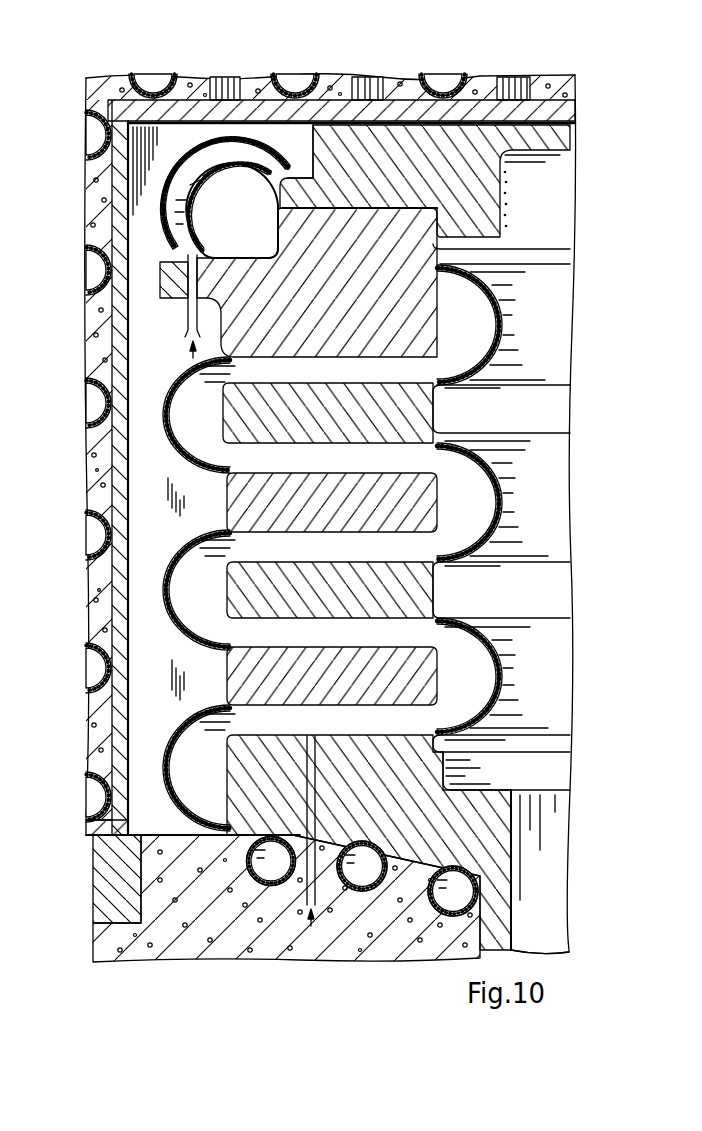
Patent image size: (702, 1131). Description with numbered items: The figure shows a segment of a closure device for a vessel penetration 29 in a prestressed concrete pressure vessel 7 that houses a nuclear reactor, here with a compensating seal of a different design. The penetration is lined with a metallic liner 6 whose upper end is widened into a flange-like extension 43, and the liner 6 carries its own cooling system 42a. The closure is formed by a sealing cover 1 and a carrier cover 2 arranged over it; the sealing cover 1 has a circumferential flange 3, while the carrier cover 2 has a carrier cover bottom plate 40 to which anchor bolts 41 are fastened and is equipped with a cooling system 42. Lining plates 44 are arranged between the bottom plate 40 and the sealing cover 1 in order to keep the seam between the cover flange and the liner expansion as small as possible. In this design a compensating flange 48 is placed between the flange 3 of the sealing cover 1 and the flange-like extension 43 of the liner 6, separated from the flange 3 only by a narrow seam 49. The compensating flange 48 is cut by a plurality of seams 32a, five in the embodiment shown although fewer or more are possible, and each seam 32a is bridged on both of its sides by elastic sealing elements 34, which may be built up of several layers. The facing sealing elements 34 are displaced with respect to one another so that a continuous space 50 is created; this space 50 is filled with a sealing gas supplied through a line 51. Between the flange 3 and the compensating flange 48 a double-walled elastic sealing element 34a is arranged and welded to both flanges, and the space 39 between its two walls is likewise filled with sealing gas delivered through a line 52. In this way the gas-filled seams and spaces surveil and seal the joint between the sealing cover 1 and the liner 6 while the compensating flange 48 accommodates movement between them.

The sealing cover 1 is at (545, 150).
The carrier cover 2 is at (205, 78).
The flange 3 is at (330, 147).
The liner 6 is at (530, 948).
The prestressed concrete pressure vessel 7 is at (382, 915).
The vessel penetration 29 is at (555, 856).
The seams 32a is at (433, 408).
The elastic sealing elements 34 is at (500, 327).
The double-walled elastic sealing element 34a is at (160, 181).
The space between the two walls 39 is at (172, 232).
The carrier cover bottom plate 40 is at (331, 100).
The anchor bolts 41 is at (363, 96).
The cooling system 42 is at (140, 85).
The cooling system 42a is at (248, 855).
The flange-like extension of the liner 43 is at (425, 790).
The lining plates 44 is at (480, 121).
The compensating flange 48 is at (415, 297).
The narrow seam 49 is at (297, 224).
The continuous space 50 is at (213, 590).
The line 51 is at (305, 897).
The line 52 is at (188, 333).